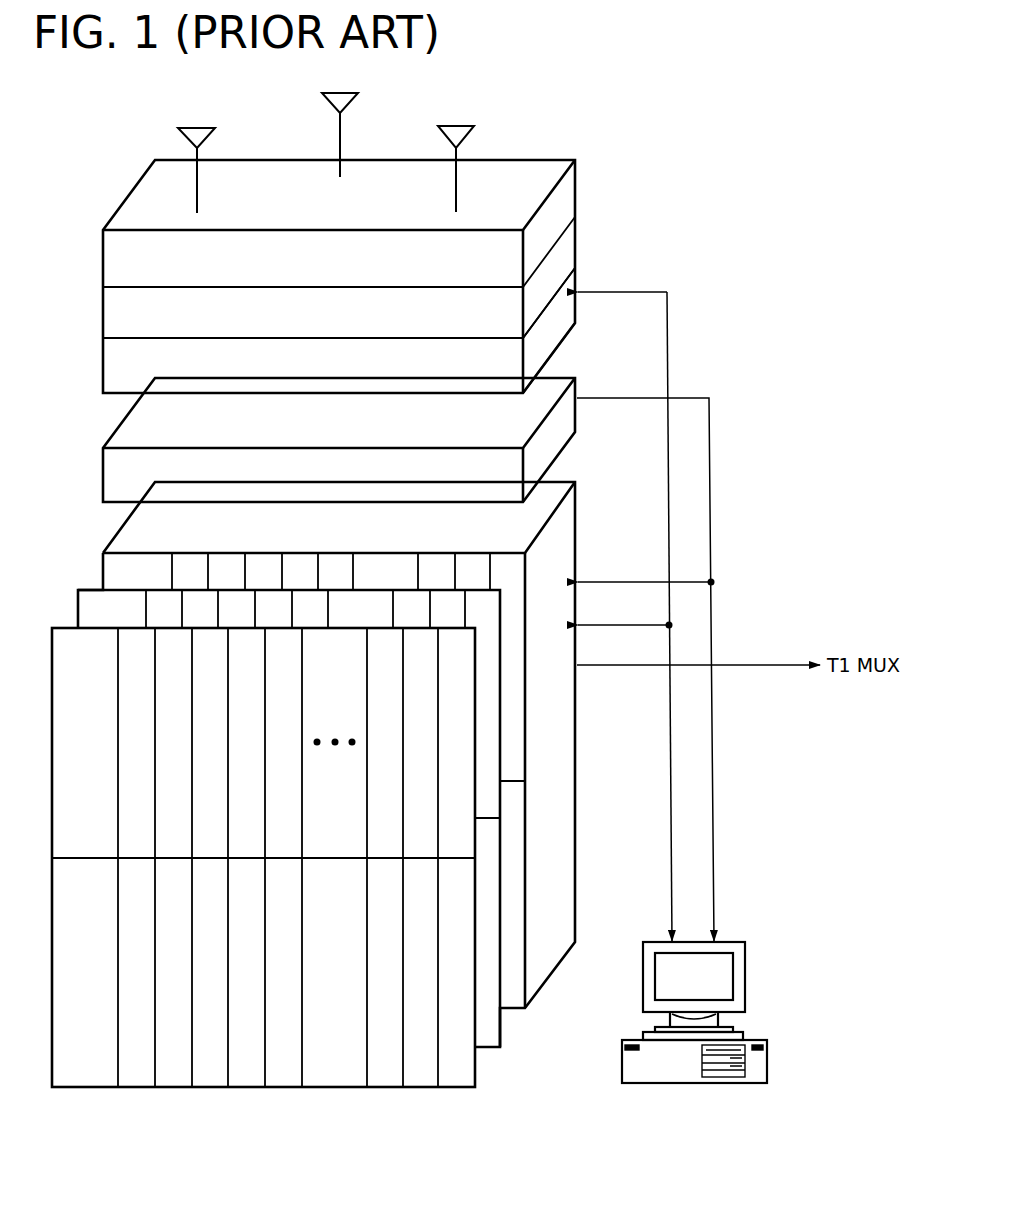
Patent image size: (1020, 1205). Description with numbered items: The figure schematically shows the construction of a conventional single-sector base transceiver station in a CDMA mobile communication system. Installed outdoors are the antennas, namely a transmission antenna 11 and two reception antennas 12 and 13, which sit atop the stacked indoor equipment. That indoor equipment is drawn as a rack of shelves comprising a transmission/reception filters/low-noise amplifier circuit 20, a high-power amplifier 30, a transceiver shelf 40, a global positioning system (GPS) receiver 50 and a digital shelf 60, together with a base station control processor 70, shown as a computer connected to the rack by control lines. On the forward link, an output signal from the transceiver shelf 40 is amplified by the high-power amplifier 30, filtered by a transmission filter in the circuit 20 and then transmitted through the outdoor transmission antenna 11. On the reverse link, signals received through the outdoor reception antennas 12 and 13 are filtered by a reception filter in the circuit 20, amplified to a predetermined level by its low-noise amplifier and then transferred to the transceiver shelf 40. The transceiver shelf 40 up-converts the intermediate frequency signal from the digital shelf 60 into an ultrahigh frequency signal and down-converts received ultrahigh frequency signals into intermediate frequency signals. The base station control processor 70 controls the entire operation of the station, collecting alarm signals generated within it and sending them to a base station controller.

The transmission antenna 11 is at (322, 105).
The reception antenna 12 is at (178, 139).
The reception antenna 13 is at (474, 136).
The transmission/reception filters/low-noise amplifier circuit 20 is at (103, 262).
The high-power amplifier 30 is at (103, 316).
The transceiver shelf 40 is at (103, 370).
The global positioning system (GPS) receiver 50 is at (103, 477).
The digital shelf 60 is at (120, 530).
The base station control processor 70 is at (745, 975).